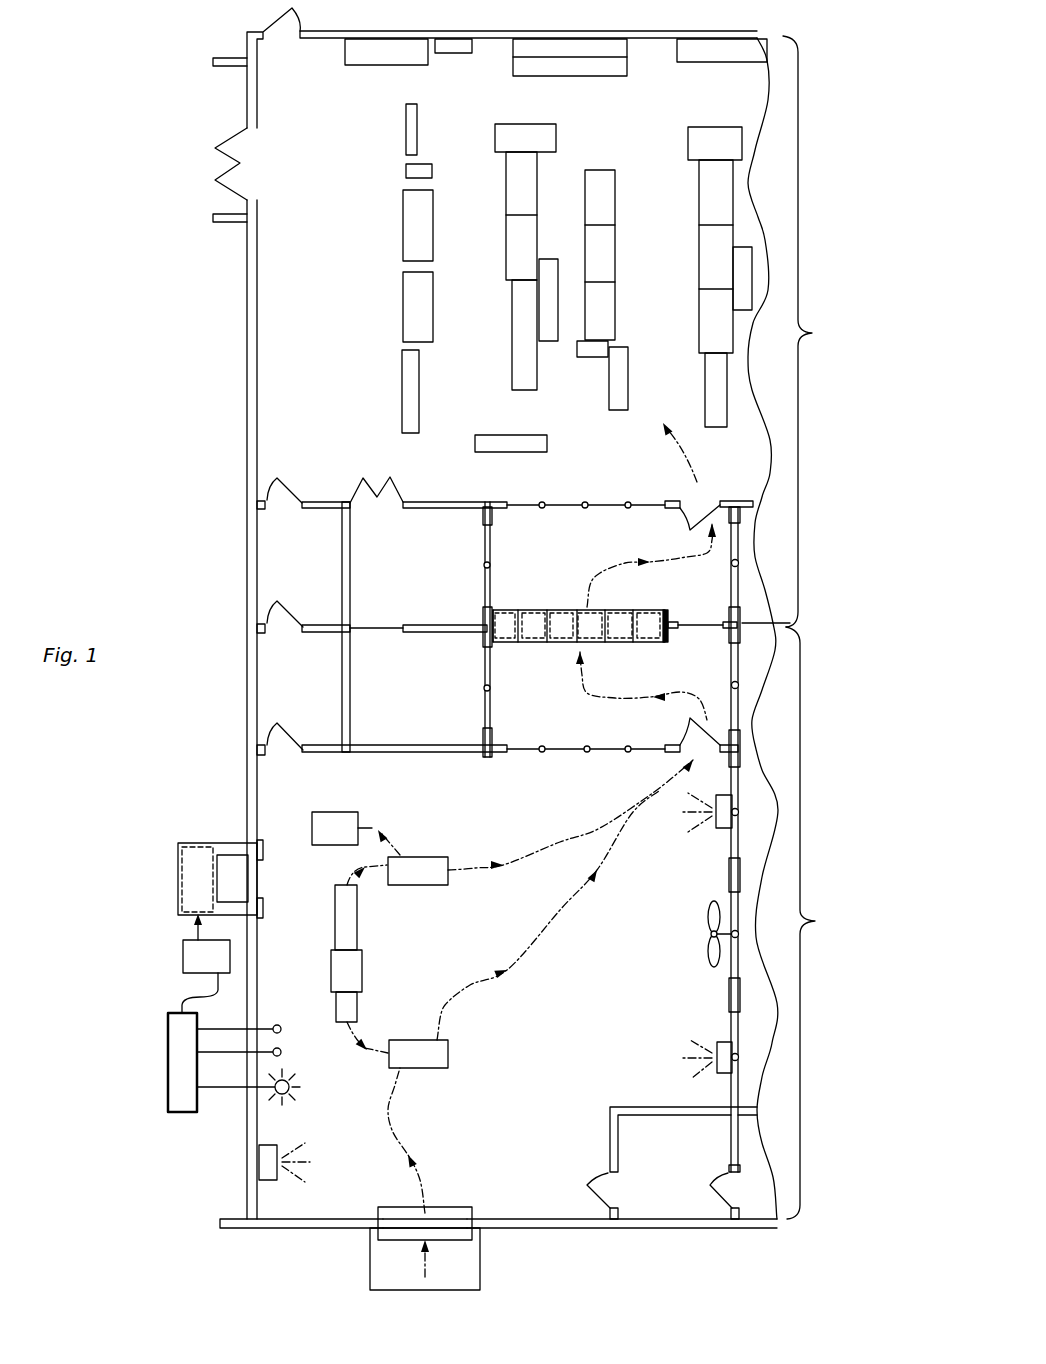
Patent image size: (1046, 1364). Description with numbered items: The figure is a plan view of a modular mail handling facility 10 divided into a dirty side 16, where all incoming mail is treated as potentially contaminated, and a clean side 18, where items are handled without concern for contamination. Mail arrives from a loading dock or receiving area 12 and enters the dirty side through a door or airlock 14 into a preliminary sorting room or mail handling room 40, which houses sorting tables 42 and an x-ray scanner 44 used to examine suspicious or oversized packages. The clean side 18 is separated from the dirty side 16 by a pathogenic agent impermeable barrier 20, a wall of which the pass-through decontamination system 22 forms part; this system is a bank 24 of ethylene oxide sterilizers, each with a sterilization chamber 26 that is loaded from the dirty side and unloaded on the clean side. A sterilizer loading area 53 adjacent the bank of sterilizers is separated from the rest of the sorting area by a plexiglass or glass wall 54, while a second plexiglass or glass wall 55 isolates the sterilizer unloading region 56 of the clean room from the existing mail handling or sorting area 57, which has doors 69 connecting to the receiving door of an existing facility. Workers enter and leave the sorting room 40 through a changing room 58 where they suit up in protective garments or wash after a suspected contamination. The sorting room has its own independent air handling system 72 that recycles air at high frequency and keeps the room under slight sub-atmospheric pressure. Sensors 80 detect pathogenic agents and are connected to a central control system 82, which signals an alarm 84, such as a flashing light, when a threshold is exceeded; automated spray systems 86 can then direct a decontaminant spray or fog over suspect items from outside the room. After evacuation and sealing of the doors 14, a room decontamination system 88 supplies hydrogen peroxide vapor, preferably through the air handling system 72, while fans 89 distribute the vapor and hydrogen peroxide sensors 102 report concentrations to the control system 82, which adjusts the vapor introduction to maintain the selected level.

The mail handling facility 10 is at (192, 516).
The receiving area 12 is at (467, 1272).
The door or airlock 14 is at (459, 1204).
The dirty side 16 is at (818, 923).
The clean side 18 is at (815, 331).
The pathogenic agent impermeable barrier 20 is at (440, 625).
The pass-through decontamination system 22 is at (553, 596).
The bank of ethylene oxide sterilizers 24 is at (520, 652).
The sterilization chamber 26 is at (650, 622).
The mail handling room 40 is at (294, 792).
The sorting tables 42 is at (432, 862).
The x-ray scanner 44 is at (357, 972).
The area adjacent the bank of sterilizers 53 is at (630, 683).
The plexiglass or glass wall 54 is at (571, 753).
The second plexiglass or glass wall 55 is at (600, 500).
The sterilizer unloading region 56 is at (612, 548).
The mail handling or sorting area 57 is at (348, 322).
The changing room 58 is at (685, 1161).
The doors 69 is at (252, 152).
The air handling system 72 is at (178, 890).
The sensors 80 is at (279, 1026).
The central control system 82 is at (168, 1072).
The alarm 84 is at (295, 1095).
The automated spray systems 86 is at (267, 1163).
The room decontamination system 88 is at (183, 957).
The fans 89 is at (710, 955).
The hydrogen peroxide sensors 102 is at (282, 1052).